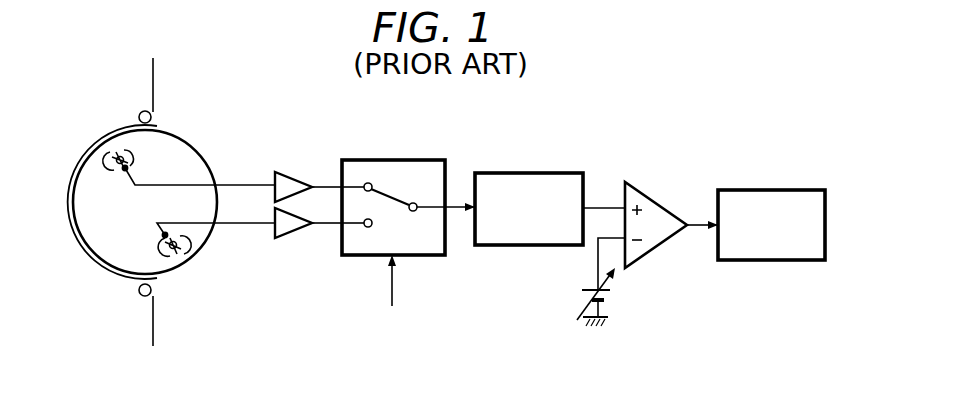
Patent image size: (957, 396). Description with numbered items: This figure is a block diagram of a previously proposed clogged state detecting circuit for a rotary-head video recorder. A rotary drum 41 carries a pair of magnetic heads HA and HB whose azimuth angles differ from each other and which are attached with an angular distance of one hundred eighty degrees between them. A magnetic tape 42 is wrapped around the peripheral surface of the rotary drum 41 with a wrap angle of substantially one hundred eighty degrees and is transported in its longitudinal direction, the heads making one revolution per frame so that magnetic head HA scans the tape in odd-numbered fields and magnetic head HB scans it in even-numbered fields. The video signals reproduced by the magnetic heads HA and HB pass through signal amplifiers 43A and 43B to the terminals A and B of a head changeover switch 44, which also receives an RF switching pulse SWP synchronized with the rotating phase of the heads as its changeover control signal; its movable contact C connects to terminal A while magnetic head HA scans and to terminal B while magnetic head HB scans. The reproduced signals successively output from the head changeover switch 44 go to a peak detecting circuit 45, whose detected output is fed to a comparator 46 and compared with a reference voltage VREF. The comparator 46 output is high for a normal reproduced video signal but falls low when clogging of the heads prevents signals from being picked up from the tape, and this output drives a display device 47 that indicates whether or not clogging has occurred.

The rotary drum 41 is at (190, 141).
The magnetic tape 42 is at (153, 320).
The signal amplifier 43A is at (292, 176).
The signal amplifier 43B is at (290, 240).
The head changeover switch 44 is at (415, 256).
The peak detecting circuit 45 is at (510, 246).
The comparator 46 is at (642, 253).
The display device 47 is at (775, 261).
The magnetic head HA is at (102, 156).
The magnetic head HB is at (187, 252).
The RF switching pulse SWP is at (396, 296).
The reference voltage VREF is at (606, 296).